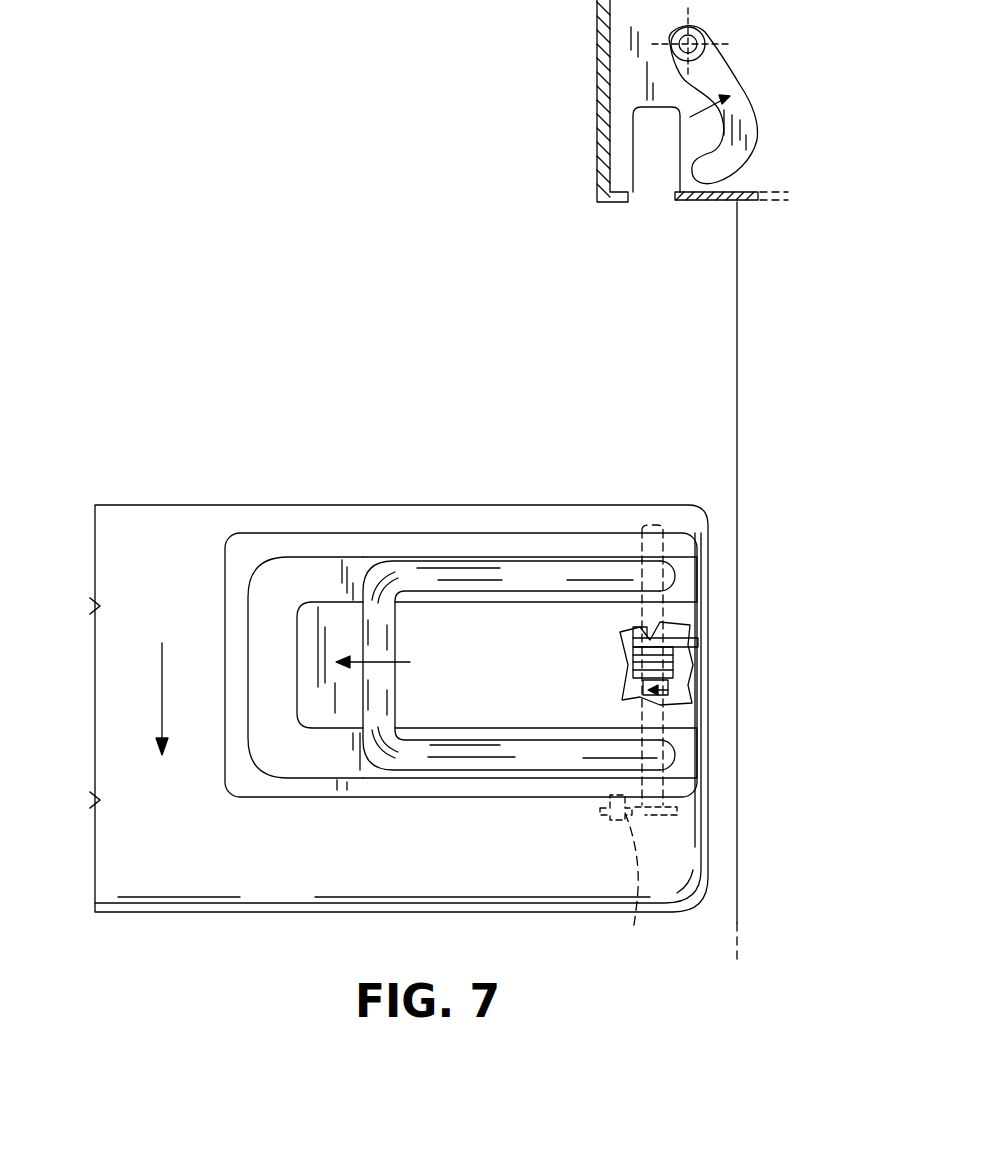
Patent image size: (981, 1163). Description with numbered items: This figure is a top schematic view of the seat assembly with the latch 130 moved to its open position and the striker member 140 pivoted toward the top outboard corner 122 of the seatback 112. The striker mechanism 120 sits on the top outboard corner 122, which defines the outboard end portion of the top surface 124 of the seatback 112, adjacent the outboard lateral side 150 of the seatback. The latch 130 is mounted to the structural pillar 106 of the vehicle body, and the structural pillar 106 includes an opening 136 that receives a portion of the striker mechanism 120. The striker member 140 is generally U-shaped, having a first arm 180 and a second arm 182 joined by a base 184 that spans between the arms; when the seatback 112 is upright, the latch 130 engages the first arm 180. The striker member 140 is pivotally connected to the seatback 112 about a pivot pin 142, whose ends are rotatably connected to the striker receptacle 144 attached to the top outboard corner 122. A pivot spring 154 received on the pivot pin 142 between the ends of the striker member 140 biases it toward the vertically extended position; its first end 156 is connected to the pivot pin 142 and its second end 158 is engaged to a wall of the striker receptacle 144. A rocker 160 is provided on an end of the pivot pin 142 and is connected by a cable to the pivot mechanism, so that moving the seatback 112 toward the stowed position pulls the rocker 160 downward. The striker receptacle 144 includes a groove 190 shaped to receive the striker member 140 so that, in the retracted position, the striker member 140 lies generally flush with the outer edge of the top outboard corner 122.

The structural pillar 106 is at (597, 75).
The seatback 112 is at (228, 908).
The striker mechanism 120 is at (360, 428).
The top outboard corner 122 is at (197, 595).
The top surface 124 is at (105, 697).
The latch 130 is at (746, 76).
The opening 136 is at (675, 193).
The striker member 140 is at (504, 566).
The pivot pin 142 is at (660, 632).
The striker receptacle 144 is at (380, 538).
The outboard lateral side 150 is at (710, 840).
The pivot spring 154 is at (672, 665).
The first end 156 is at (633, 682).
The second end 158 is at (683, 645).
The rocker 160 is at (638, 742).
The first arm 180 is at (538, 578).
The second arm 182 is at (500, 752).
The base 184 is at (390, 687).
The groove 190 is at (300, 585).